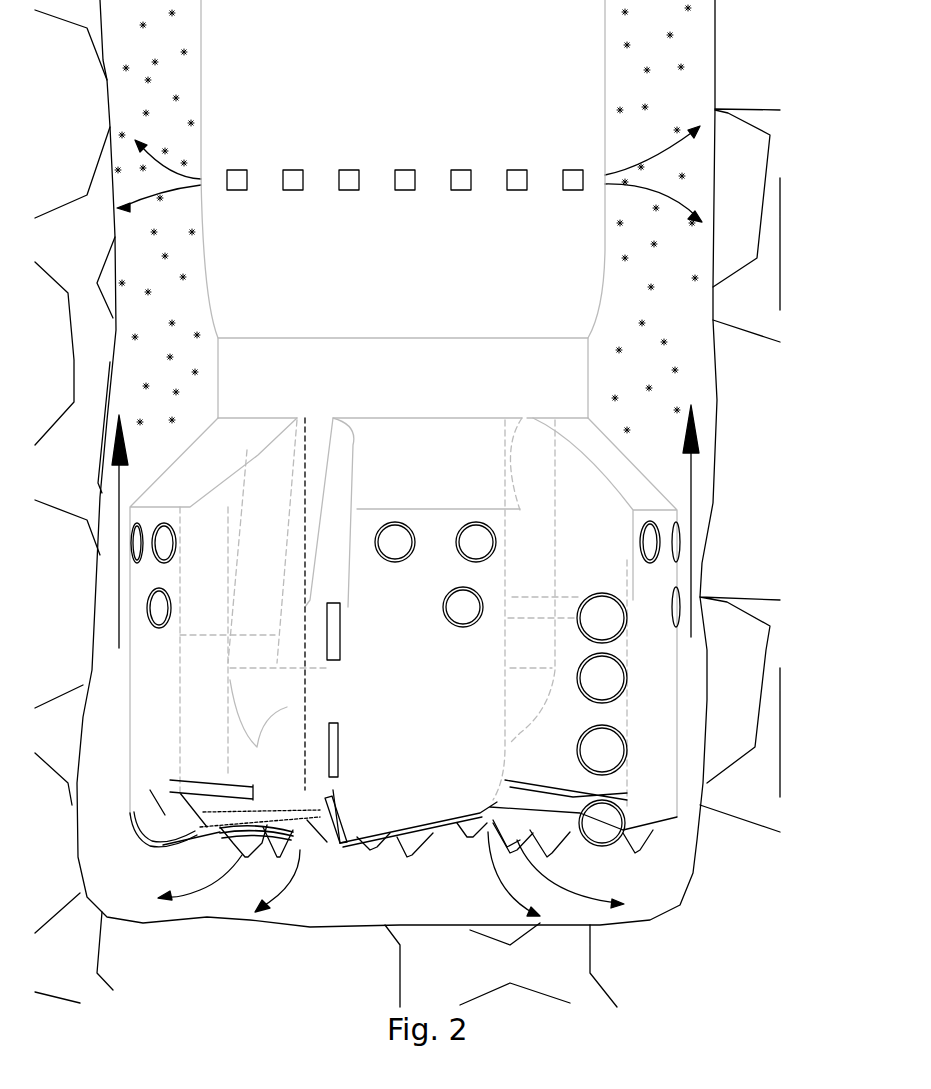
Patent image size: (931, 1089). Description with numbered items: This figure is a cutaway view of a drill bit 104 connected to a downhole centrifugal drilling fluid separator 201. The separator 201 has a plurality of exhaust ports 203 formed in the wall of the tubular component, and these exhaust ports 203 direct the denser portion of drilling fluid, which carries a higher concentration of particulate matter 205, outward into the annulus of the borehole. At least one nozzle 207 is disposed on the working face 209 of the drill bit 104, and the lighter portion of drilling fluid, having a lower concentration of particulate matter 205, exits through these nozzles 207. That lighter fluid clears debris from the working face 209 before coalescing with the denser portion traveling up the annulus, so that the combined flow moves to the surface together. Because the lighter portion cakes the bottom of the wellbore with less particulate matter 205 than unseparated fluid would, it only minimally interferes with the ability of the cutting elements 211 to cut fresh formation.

The drill bit 104 is at (478, 682).
The downhole centrifugal drilling fluid separator 201 is at (613, 132).
The exhaust ports 203 is at (573, 191).
The particulate matter 205 is at (700, 363).
The nozzle 207 is at (310, 838).
The working face 209 is at (450, 840).
The cutting elements 211 is at (553, 857).